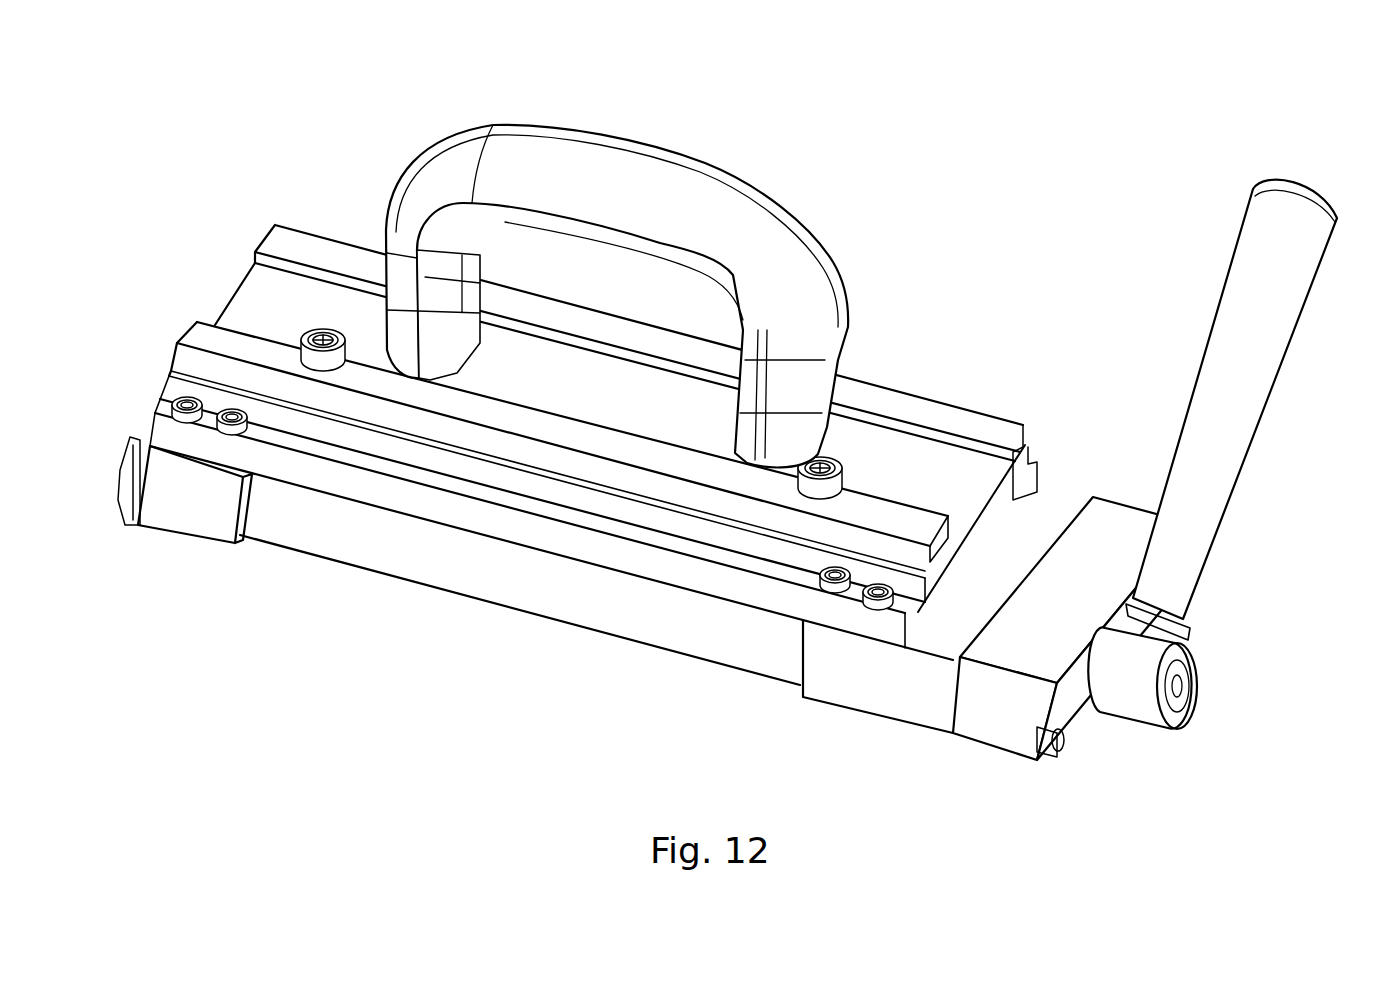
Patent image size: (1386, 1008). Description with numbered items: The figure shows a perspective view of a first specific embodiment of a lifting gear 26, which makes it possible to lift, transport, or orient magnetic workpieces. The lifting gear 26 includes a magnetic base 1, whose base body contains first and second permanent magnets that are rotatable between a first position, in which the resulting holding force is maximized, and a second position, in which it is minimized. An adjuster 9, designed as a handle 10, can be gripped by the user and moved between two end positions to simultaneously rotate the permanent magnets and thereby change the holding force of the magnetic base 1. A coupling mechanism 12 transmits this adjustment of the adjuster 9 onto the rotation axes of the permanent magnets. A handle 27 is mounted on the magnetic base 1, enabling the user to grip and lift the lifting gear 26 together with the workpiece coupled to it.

The magnetic base 1 is at (305, 525).
The adjuster 9 is at (1238, 373).
The handle 10 is at (1142, 678).
The coupling mechanism 12 is at (1010, 693).
The lifting gear 26 is at (930, 255).
The handle 27 is at (442, 183).